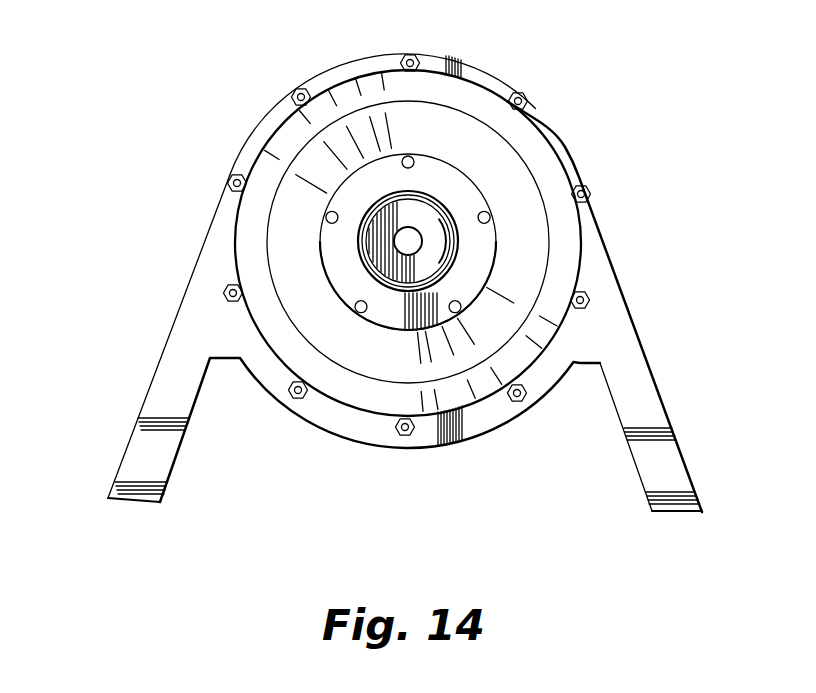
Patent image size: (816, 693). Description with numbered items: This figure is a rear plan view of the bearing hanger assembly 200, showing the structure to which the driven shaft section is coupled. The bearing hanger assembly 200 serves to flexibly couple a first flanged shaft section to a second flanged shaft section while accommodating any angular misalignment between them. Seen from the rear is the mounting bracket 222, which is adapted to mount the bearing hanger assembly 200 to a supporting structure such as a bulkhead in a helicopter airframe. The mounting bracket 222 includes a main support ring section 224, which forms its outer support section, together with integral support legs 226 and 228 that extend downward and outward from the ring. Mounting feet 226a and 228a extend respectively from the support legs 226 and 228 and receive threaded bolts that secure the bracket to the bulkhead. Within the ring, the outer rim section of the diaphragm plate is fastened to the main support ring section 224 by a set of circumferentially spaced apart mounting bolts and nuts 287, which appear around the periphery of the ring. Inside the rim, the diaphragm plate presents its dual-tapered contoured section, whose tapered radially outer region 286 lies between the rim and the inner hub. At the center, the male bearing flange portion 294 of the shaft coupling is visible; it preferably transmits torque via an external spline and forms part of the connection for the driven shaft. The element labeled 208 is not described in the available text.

The bearing hanger assembly 200 is at (192, 119).
The impeller plate 208 is at (289, 222).
The mounting bracket 222 is at (614, 242).
The main support ring section 224 is at (481, 76).
The support leg 226 is at (633, 374).
The mounting foot 226a is at (677, 511).
The support leg 228 is at (163, 380).
The mounting foot 228a is at (126, 500).
The tapered radially outer region 286 is at (563, 331).
The nuts 287 is at (403, 57).
The male bearing flange portion 294 is at (381, 307).